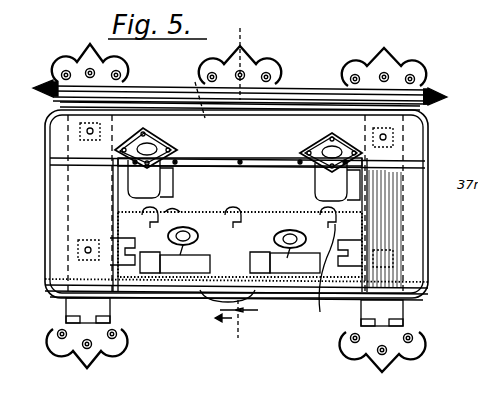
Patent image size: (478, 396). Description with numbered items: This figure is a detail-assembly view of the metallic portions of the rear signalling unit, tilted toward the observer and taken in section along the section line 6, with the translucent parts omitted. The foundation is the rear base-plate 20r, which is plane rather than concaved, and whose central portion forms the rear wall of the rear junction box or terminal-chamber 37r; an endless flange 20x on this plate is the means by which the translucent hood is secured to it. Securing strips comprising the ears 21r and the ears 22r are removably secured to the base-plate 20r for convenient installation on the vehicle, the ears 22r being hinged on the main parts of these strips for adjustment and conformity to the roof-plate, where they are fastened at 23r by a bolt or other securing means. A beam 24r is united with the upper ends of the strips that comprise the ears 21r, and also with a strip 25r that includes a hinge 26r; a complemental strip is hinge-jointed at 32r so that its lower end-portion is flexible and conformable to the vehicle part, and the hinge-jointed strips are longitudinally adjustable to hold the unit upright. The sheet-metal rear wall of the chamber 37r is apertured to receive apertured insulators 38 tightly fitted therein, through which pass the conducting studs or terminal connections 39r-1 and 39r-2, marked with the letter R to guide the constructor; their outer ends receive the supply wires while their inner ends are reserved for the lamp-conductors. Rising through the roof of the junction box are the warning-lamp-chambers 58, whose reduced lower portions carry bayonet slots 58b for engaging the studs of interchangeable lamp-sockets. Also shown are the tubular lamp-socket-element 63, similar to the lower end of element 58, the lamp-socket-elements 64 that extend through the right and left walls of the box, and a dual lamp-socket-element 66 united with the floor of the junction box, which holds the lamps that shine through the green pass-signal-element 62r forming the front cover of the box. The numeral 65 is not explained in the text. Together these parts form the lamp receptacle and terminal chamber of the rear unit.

The section line 6 is at (238, 183).
The rear base-plate 20r is at (424, 132).
The endless flange 20x is at (143, 117).
The ears 21r is at (80, 57).
The ears 22r is at (68, 348).
The securing point 23r is at (78, 353).
The beam 24r is at (323, 88).
The strip 25r is at (199, 87).
The hinge 26r is at (262, 107).
The hinge joint 32r is at (246, 302).
The rear junction box 37r is at (117, 226).
The insulators 38 is at (273, 240).
The terminal connection 39r-1 is at (285, 263).
The terminal connection 39r-2 is at (175, 263).
The warning-lamp-chamber 58 is at (180, 128).
The bayonet slots 58b is at (173, 211).
The pass-signal-element 62r is at (466, 307).
The tubular lamp-socket-element 63 is at (237, 208).
The lamp-socket-elements 64 is at (113, 250).
The pointer 65 is at (227, 319).
The dual lamp-socket-element 66 is at (208, 293).